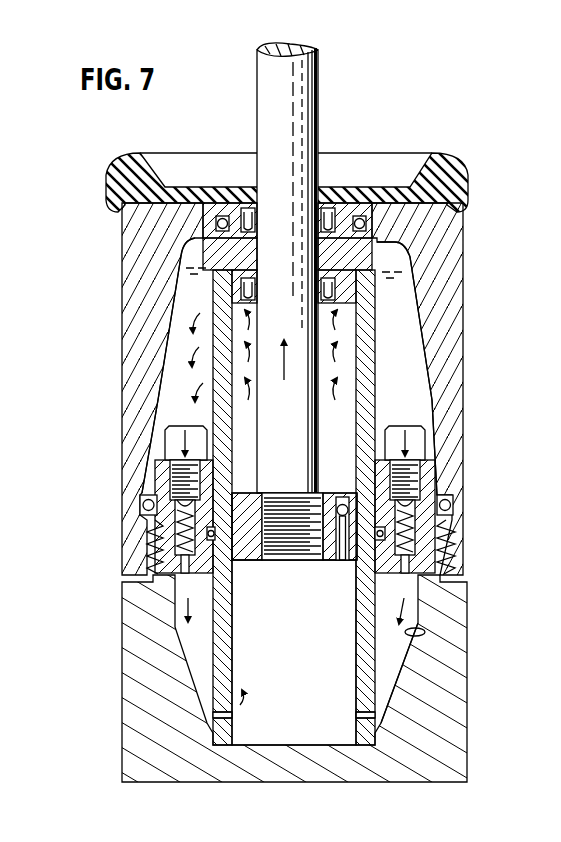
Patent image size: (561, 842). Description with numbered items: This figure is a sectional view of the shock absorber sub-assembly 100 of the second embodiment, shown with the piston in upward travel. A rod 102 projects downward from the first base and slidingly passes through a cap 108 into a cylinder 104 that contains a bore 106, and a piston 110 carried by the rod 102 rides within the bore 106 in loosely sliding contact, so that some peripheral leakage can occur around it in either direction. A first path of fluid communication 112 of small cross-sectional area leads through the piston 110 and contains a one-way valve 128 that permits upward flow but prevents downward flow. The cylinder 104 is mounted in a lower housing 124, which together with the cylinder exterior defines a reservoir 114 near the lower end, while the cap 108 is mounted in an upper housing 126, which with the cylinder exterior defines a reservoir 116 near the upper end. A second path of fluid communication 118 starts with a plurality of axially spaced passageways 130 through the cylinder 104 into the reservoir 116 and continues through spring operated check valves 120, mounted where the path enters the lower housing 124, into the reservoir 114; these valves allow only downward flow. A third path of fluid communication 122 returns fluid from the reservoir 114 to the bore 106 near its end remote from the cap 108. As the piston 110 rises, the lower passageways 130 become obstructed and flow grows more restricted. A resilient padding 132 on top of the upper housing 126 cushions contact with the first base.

The shock absorber sub-assembly 100 is at (470, 345).
The rod 102 is at (320, 107).
The cylinder 104 is at (375, 373).
The bore 106 is at (372, 402).
The cap 108 is at (372, 239).
The piston 110 is at (254, 565).
The first path of fluid communication 112 is at (345, 565).
The reservoir 114 is at (425, 632).
The reservoir 116 is at (407, 338).
The second path of fluid communication 118 is at (170, 375).
The spring operated check valves 120 is at (155, 470).
The third path of fluid communication 122 is at (232, 706).
The lower housing 124 is at (468, 708).
The upper housing 126 is at (445, 451).
The one-way valve 128 is at (341, 493).
The axially spaced passageways 130 is at (222, 336).
The resilient padding 132 is at (457, 168).